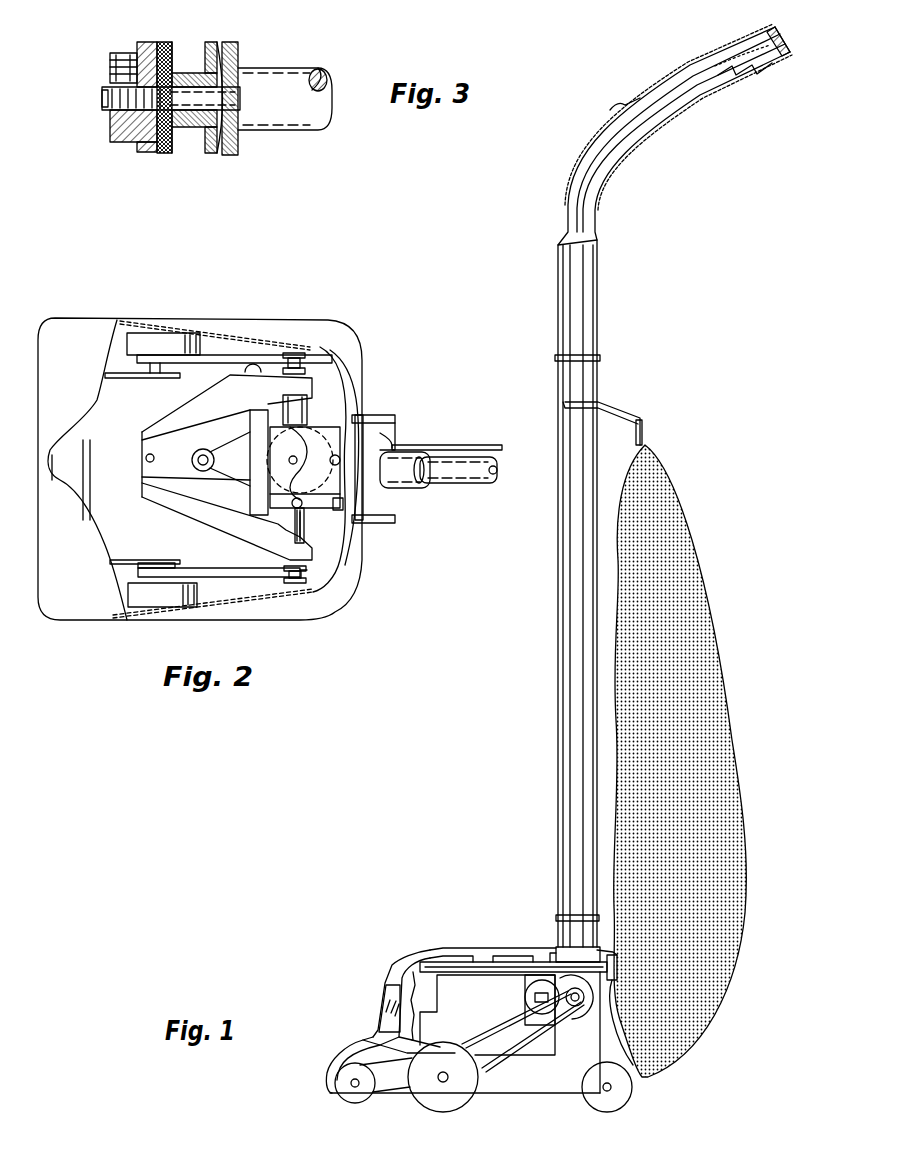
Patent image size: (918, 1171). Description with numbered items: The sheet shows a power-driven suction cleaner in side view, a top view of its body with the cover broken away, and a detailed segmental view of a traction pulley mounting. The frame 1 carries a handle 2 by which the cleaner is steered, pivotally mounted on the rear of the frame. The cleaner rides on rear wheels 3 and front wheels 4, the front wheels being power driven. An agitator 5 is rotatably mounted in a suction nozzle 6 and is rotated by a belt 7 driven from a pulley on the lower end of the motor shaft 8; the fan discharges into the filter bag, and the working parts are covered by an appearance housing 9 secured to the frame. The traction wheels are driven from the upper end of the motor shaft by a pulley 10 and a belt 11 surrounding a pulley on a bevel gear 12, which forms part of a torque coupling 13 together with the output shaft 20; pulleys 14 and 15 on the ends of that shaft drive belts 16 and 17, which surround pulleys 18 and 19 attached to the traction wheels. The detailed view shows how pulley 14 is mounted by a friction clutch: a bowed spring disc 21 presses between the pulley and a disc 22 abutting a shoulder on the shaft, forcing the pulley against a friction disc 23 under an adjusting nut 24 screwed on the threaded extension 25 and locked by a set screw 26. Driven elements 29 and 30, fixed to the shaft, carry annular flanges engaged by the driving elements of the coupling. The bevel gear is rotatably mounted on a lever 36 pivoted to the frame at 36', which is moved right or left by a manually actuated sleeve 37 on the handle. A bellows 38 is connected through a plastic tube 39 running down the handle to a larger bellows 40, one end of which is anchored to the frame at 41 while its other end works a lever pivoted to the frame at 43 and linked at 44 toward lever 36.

In FIG. 2, the frame 1 is at (136, 530).
In FIG. 1, the frame 1 is at (538, 1088).
In FIG. 2, the handle 2 is at (470, 487).
In FIG. 1, the handle 2 is at (597, 323).
In FIG. 1, the rear wheels 3 is at (620, 1105).
In FIG. 2, the front wheels 4 is at (175, 333).
In FIG. 1, the front wheels 4 is at (465, 1105).
In FIG. 1, the agitator 5 is at (345, 1105).
In FIG. 1, the suction nozzle 6 is at (345, 1050).
In FIG. 1, the belt 7 is at (400, 1100).
In FIG. 1, the motor shaft 8 is at (500, 956).
In FIG. 1, the appearance housing 9 is at (407, 956).
In FIG. 2, the pulley 10 is at (192, 460).
In FIG. 2, the belt 11 is at (245, 446).
In FIG. 2, the bevel gear 12 is at (312, 488).
In FIG. 1, the torque coupling 13 is at (590, 1014).
In FIG. 3, the pulley 14 is at (210, 42).
In FIG. 2, the pulley 14 is at (300, 353).
In FIG. 2, the pulley 15 is at (313, 592).
In FIG. 2, the belt 16 is at (215, 355).
In FIG. 2, the belt 17 is at (232, 580).
In FIG. 1, the belt 17 is at (497, 1022).
In FIG. 2, the pulley 18 is at (138, 362).
In FIG. 2, the pulley 19 is at (127, 590).
In FIG. 3, the output shaft 20 is at (288, 103).
In FIG. 2, the output shaft 20 is at (267, 567).
In FIG. 3, the bowed spring disc 21 is at (226, 148).
In FIG. 3, the disc 22 is at (238, 58).
In FIG. 3, the friction disc 23 is at (165, 42).
In FIG. 3, the adjusting nut 24 is at (150, 42).
In FIG. 3, the extension 25 is at (102, 98).
In FIG. 3, the set screw 26 is at (118, 53).
In FIG. 2, the driven element 29 is at (330, 410).
In FIG. 2, the driven element 30 is at (350, 560).
In FIG. 2, the lever 36 is at (297, 467).
In FIG. 2, the pivot 36' is at (124, 445).
In FIG. 1, the sleeve 37 is at (680, 92).
In FIG. 1, the bellows 38 is at (745, 48).
In FIG. 2, the plastic tube 39 is at (490, 446).
In FIG. 1, the plastic tube 39 is at (558, 321).
In FIG. 2, the bellows 40 is at (235, 405).
In FIG. 2, the anchor point 41 is at (254, 380).
In FIG. 2, the pivot 43 is at (305, 510).
In FIG. 2, the pivot 44 is at (350, 502).